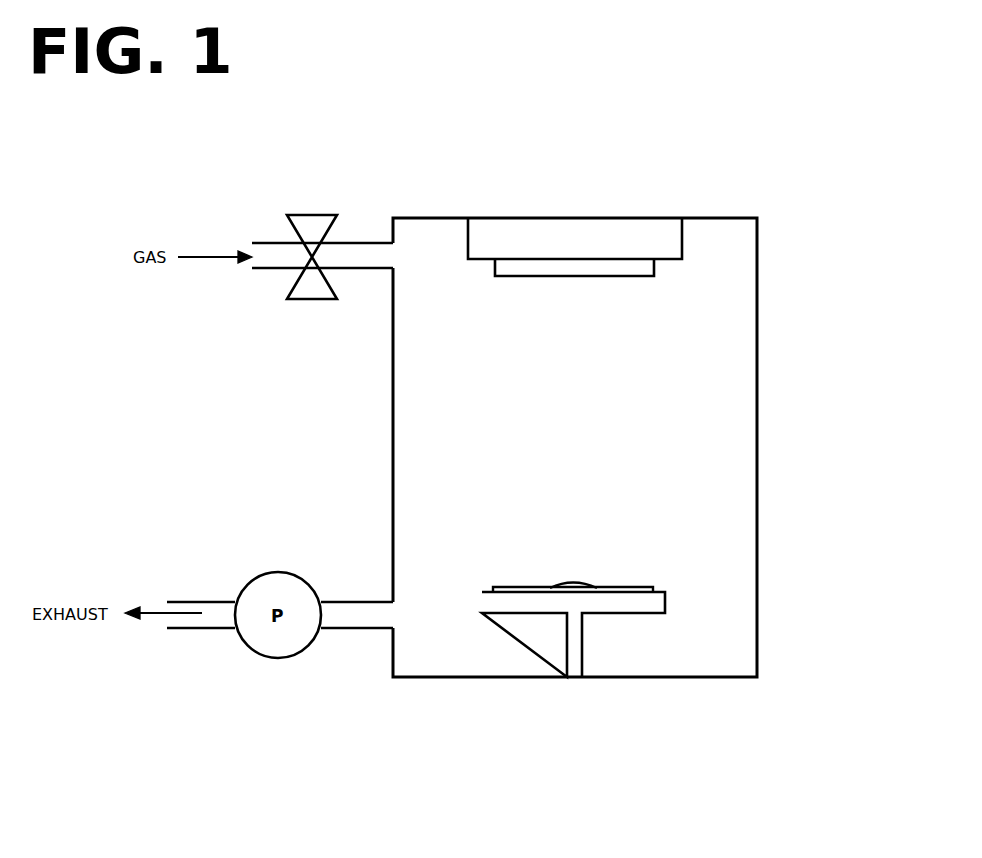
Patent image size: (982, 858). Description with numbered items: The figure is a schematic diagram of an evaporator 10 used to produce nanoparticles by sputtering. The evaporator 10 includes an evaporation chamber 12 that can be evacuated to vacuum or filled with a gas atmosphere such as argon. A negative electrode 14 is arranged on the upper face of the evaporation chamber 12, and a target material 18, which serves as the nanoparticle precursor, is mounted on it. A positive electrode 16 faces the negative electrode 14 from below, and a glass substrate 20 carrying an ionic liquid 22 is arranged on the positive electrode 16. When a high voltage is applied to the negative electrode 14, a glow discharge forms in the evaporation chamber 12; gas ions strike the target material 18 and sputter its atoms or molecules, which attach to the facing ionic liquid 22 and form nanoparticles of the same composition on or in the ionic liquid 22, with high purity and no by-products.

The evaporator 10 is at (757, 170).
The evaporation chamber 12 is at (758, 367).
The negative electrode 14 is at (735, 185).
The positive electrode 16 is at (647, 613).
The target material 18 is at (516, 268).
The glass substrate 20 is at (622, 587).
The ionic liquid 22 is at (575, 582).